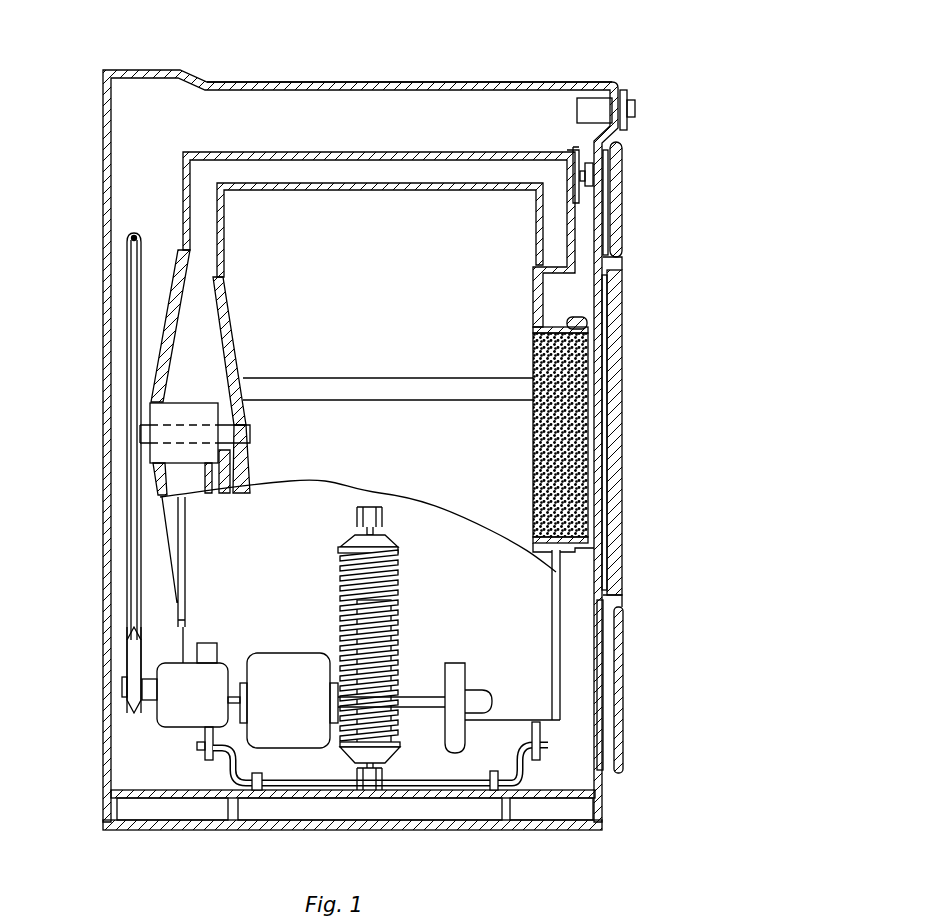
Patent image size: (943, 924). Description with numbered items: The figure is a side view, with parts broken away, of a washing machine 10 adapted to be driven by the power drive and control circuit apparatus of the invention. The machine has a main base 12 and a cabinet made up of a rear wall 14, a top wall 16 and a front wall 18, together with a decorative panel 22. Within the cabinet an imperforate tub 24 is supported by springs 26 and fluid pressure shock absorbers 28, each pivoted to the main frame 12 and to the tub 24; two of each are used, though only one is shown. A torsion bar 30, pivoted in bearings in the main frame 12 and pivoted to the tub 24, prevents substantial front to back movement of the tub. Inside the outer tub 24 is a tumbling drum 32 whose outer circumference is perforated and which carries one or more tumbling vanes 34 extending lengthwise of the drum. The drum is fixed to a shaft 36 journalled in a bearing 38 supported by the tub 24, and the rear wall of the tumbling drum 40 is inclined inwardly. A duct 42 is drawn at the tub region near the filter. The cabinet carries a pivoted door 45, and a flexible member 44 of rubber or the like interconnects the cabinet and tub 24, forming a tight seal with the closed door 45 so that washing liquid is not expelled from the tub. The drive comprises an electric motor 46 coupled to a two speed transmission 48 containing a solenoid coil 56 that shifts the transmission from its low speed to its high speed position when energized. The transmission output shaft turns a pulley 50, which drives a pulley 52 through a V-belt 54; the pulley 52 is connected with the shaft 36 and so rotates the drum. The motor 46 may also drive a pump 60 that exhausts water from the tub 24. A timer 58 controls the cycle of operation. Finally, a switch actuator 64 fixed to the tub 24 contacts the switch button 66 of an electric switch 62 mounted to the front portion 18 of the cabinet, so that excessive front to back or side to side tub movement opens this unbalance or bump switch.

The washing machine 10 is at (462, 82).
The main base 12 is at (305, 830).
The rear wall 14 is at (103, 207).
The top wall 16 is at (283, 82).
The front wall 18 is at (607, 232).
The decorative panel 22 is at (612, 190).
The imperforate tub 24 is at (290, 152).
The springs 26 is at (393, 580).
The fluid pressure shock absorbers 28 is at (390, 652).
The torsion bar 30 is at (412, 780).
The tumbling drum 32 is at (383, 190).
The tumbling vanes 34 is at (345, 387).
The shaft 36 is at (250, 437).
The bearing 38 is at (178, 403).
The rear wall of the tumbling drum 40 is at (232, 340).
The duct 42 is at (533, 270).
The flexible member 44 is at (545, 455).
The door 45 is at (618, 345).
The electric motor 46 is at (288, 658).
The two speed transmission 48 is at (186, 710).
The pulley 50 is at (127, 700).
The pulley 52 is at (140, 246).
The V-belt 54 is at (127, 652).
The solenoid coil 56 is at (207, 643).
The timer 58 is at (592, 105).
The pump 60 is at (456, 670).
The electric switch 62 is at (605, 168).
The switch actuator 64 is at (575, 150).
The switch button 66 is at (578, 180).